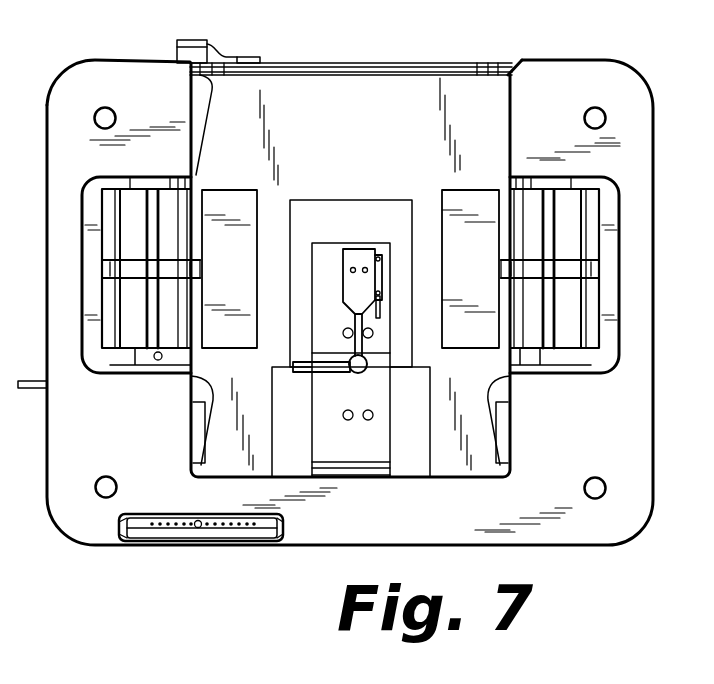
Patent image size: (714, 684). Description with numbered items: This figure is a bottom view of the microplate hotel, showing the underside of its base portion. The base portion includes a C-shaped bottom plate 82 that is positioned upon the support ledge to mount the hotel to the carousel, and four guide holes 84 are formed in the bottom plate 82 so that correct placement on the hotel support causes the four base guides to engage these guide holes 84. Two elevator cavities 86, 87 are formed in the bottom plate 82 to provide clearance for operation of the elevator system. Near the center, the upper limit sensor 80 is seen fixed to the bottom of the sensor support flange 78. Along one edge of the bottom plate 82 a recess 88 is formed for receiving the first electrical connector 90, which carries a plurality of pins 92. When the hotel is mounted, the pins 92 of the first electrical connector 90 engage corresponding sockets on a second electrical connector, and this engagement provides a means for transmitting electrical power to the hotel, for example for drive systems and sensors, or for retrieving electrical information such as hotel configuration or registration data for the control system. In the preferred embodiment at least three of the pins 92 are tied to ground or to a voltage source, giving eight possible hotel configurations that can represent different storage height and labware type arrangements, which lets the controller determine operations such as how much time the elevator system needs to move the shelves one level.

The sensor support flange 78 is at (352, 446).
The upper limit sensor 80 is at (356, 248).
The bottom plate 82 is at (128, 417).
The guide holes 84 is at (113, 114).
The elevator cavity 86 is at (592, 372).
The elevator cavity 87 is at (110, 178).
The recess 88 is at (220, 542).
The first electrical connector 90 is at (150, 542).
The pins 92 is at (245, 516).